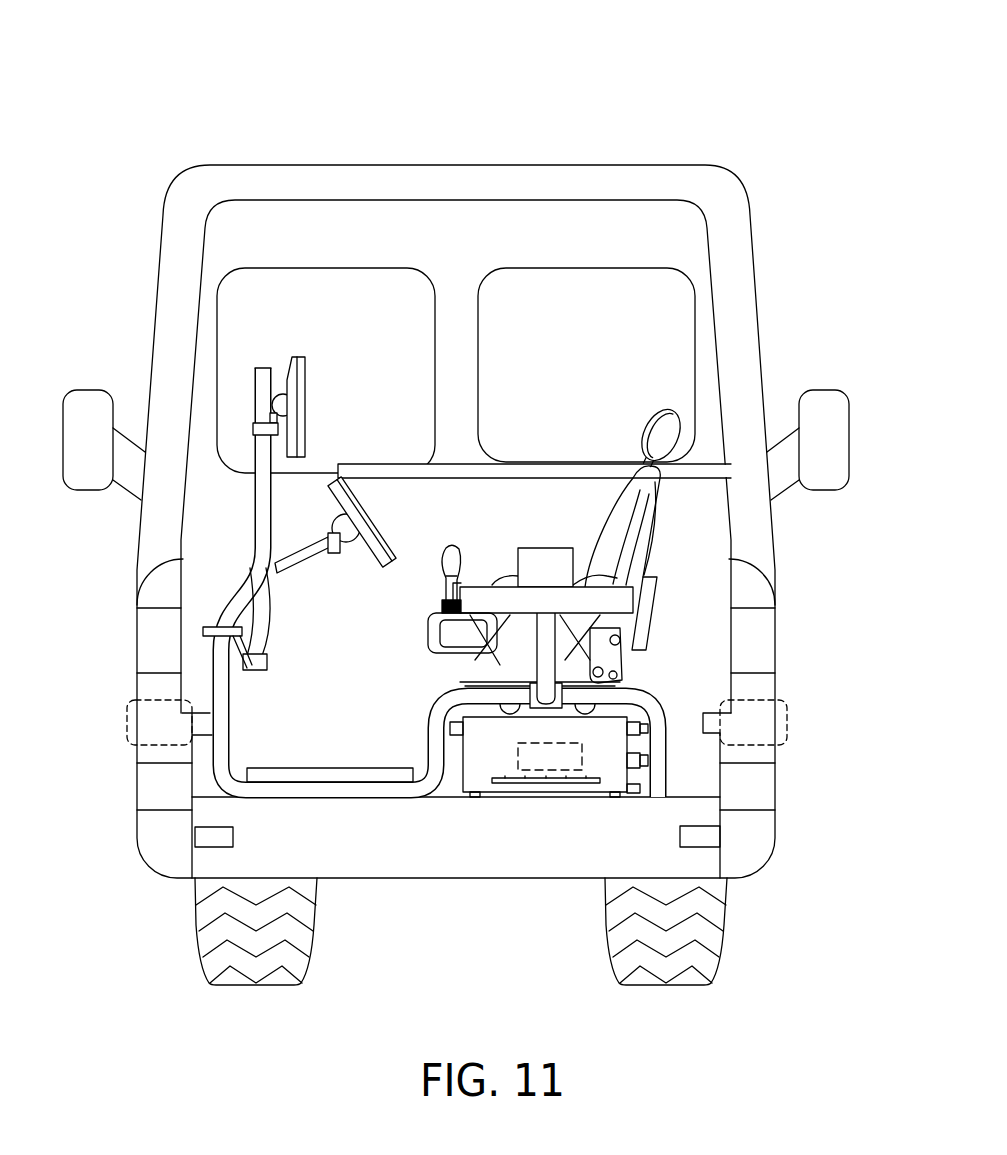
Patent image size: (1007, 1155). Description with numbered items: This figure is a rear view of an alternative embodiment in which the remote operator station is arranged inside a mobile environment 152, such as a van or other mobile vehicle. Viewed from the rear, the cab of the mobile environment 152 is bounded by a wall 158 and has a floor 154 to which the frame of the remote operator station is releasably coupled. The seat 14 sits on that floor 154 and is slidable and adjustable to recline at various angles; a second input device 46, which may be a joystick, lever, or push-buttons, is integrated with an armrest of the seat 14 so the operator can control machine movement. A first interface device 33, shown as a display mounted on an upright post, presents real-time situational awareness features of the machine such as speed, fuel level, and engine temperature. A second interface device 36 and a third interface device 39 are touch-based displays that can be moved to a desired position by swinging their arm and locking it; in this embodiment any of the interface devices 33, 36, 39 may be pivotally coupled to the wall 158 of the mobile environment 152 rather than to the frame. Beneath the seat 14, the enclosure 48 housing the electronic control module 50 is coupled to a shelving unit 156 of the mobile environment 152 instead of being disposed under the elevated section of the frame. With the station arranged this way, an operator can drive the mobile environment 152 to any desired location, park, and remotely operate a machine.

The mobile environment 152 is at (757, 62).
The wall 158 is at (175, 370).
The shelving unit 156 is at (703, 470).
The floor 154 is at (660, 793).
The enclosure 48 is at (530, 767).
The electronic control module 50 is at (550, 770).
The second input device 46 is at (447, 552).
The second interface device 36 is at (334, 573).
The third interface device 39 is at (371, 522).
The first interface device 33 is at (305, 398).
The seat 14 is at (660, 433).